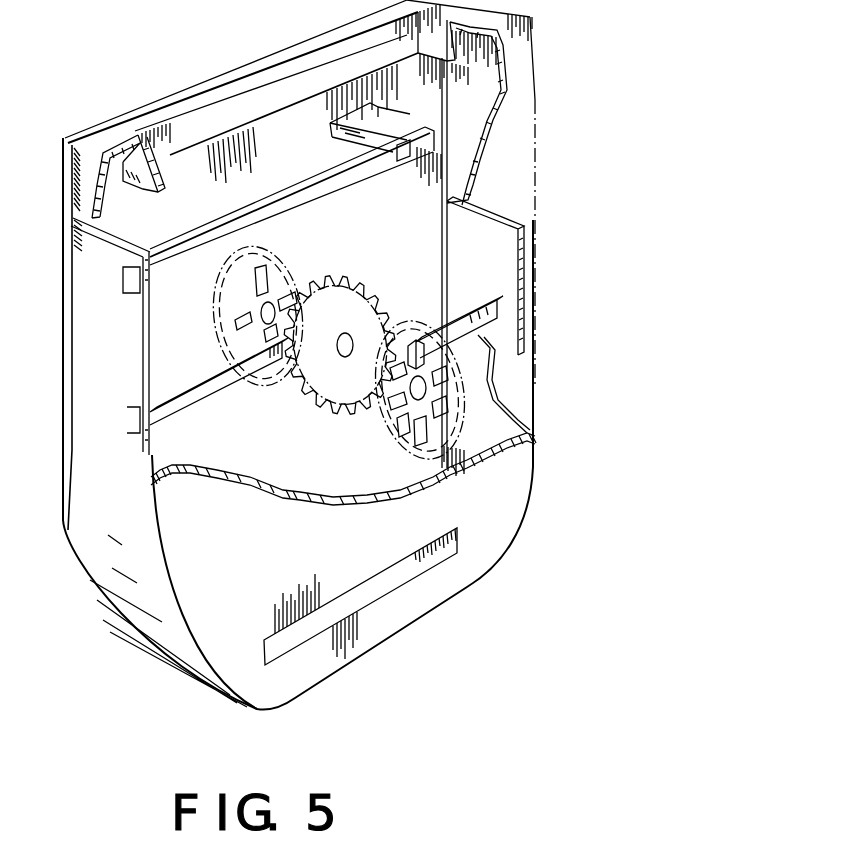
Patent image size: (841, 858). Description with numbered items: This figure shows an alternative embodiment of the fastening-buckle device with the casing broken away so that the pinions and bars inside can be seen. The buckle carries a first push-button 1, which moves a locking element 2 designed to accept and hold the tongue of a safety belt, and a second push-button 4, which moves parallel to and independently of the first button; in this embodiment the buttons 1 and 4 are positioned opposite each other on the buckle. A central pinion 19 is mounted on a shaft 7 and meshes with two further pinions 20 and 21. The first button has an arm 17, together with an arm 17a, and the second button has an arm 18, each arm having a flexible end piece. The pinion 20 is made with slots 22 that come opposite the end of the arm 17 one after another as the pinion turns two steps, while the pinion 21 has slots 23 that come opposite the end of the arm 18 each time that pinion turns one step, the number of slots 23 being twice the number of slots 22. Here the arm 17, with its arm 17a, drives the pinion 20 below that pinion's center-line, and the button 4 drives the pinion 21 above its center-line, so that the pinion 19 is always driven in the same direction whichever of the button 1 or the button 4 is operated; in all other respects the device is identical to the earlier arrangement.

The first push-button 1 is at (95, 308).
The locking element 2 is at (353, 138).
The second push-button 4 is at (503, 278).
The shaft 7 is at (337, 350).
The arm 17 is at (217, 380).
The arm 17a is at (306, 190).
The arm 18 is at (480, 327).
The pinion 19 is at (333, 283).
The pinion 20 is at (286, 268).
The pinion 21 is at (401, 340).
The slots 22 is at (242, 328).
The slots 23 is at (400, 410).